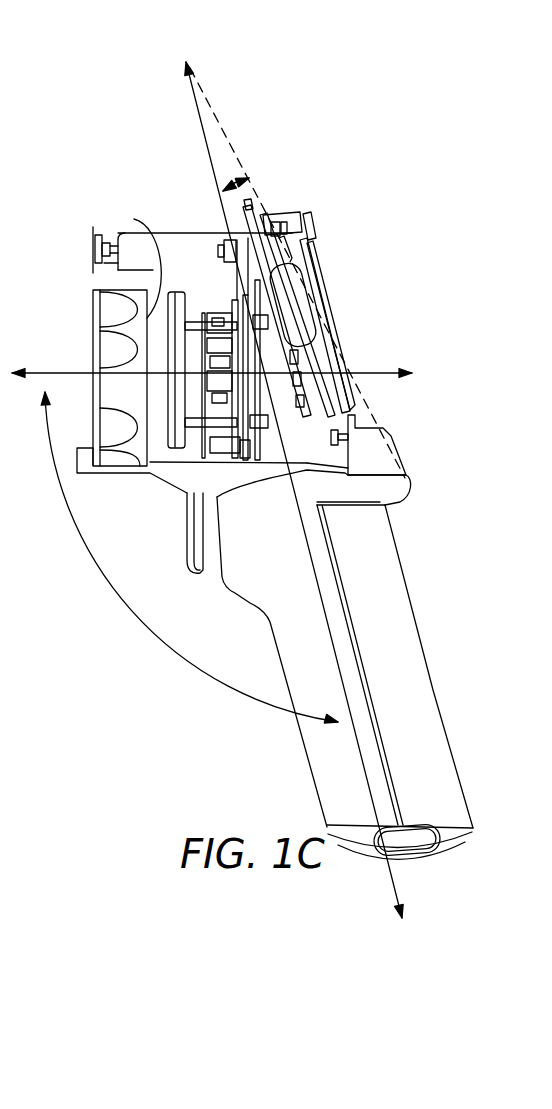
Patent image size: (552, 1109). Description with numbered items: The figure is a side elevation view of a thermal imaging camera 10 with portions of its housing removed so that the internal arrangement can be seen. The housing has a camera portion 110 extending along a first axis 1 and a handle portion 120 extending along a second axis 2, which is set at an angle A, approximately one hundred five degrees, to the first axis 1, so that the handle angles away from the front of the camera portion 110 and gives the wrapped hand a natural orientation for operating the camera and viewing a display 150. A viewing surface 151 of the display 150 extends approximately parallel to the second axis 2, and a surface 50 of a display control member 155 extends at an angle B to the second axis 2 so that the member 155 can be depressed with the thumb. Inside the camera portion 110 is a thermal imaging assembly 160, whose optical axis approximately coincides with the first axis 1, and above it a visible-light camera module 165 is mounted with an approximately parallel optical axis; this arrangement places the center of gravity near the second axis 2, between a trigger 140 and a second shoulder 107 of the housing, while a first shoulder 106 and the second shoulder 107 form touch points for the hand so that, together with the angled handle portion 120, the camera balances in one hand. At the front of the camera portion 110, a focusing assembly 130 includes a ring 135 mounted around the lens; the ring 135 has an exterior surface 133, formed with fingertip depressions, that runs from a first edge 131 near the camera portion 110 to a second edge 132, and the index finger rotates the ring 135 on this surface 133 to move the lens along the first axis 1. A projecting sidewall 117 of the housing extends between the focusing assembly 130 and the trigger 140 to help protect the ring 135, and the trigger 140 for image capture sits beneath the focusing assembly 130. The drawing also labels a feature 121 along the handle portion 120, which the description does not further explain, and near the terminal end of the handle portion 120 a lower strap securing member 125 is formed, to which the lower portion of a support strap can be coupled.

The first axis 1 is at (378, 372).
The second axis 2 is at (205, 135).
The thermal imaging camera 10 is at (330, 145).
The surface of display control member 50 is at (389, 436).
The first shoulder 106 is at (242, 603).
The second shoulder 107 is at (390, 507).
The camera portion 110 is at (450, 463).
The projecting sidewall 117 is at (103, 478).
The handle portion 120 is at (278, 743).
The grip insert 121 is at (420, 682).
The lower strap securing member 125 is at (413, 838).
The focusing assembly 130 is at (90, 285).
The first edge 131 is at (136, 221).
The second edge 132 is at (92, 320).
The exterior surface 133 is at (144, 390).
The ring 135 is at (92, 348).
The trigger 140 is at (187, 548).
The display 150 is at (330, 270).
The viewing surface 151 is at (327, 303).
The display control member 155 is at (372, 449).
The thermal imaging assembly 160 is at (207, 263).
The visible-light camera module 165 is at (175, 247).
The angle A is at (120, 652).
The angle B is at (237, 183).